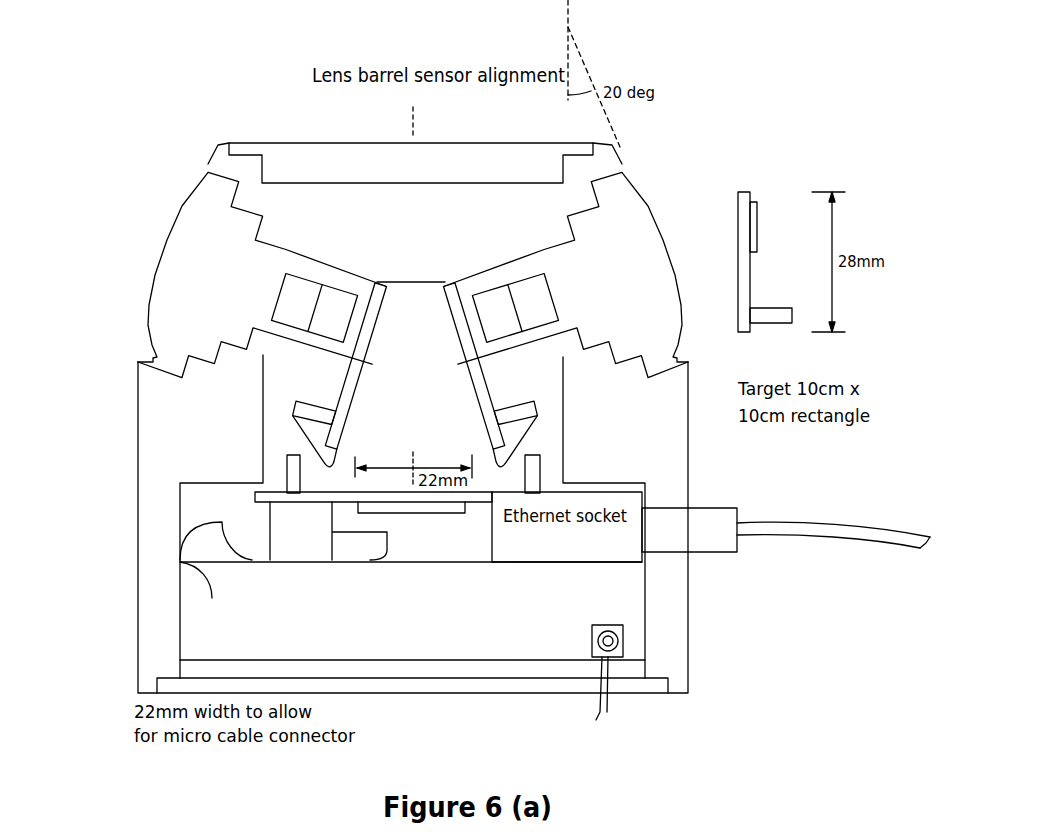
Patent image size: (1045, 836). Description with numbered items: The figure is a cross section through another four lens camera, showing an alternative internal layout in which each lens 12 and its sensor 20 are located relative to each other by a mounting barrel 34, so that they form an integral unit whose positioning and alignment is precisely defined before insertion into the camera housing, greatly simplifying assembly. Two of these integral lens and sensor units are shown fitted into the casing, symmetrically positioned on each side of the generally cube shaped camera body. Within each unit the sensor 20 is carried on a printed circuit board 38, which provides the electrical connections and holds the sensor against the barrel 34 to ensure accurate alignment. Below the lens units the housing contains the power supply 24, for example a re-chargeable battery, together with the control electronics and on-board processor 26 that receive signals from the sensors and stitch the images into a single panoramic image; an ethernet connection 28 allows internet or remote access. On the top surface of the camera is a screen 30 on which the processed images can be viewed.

The lens 12 is at (175, 238).
The sensor 20 is at (357, 342).
The power supply 24 is at (655, 710).
The image processing electronics 26 is at (587, 612).
The ethernet connection 28 is at (707, 540).
The screen 30 is at (290, 150).
The mounting barrel 34 is at (283, 355).
The printed circuit board 38 is at (342, 417).